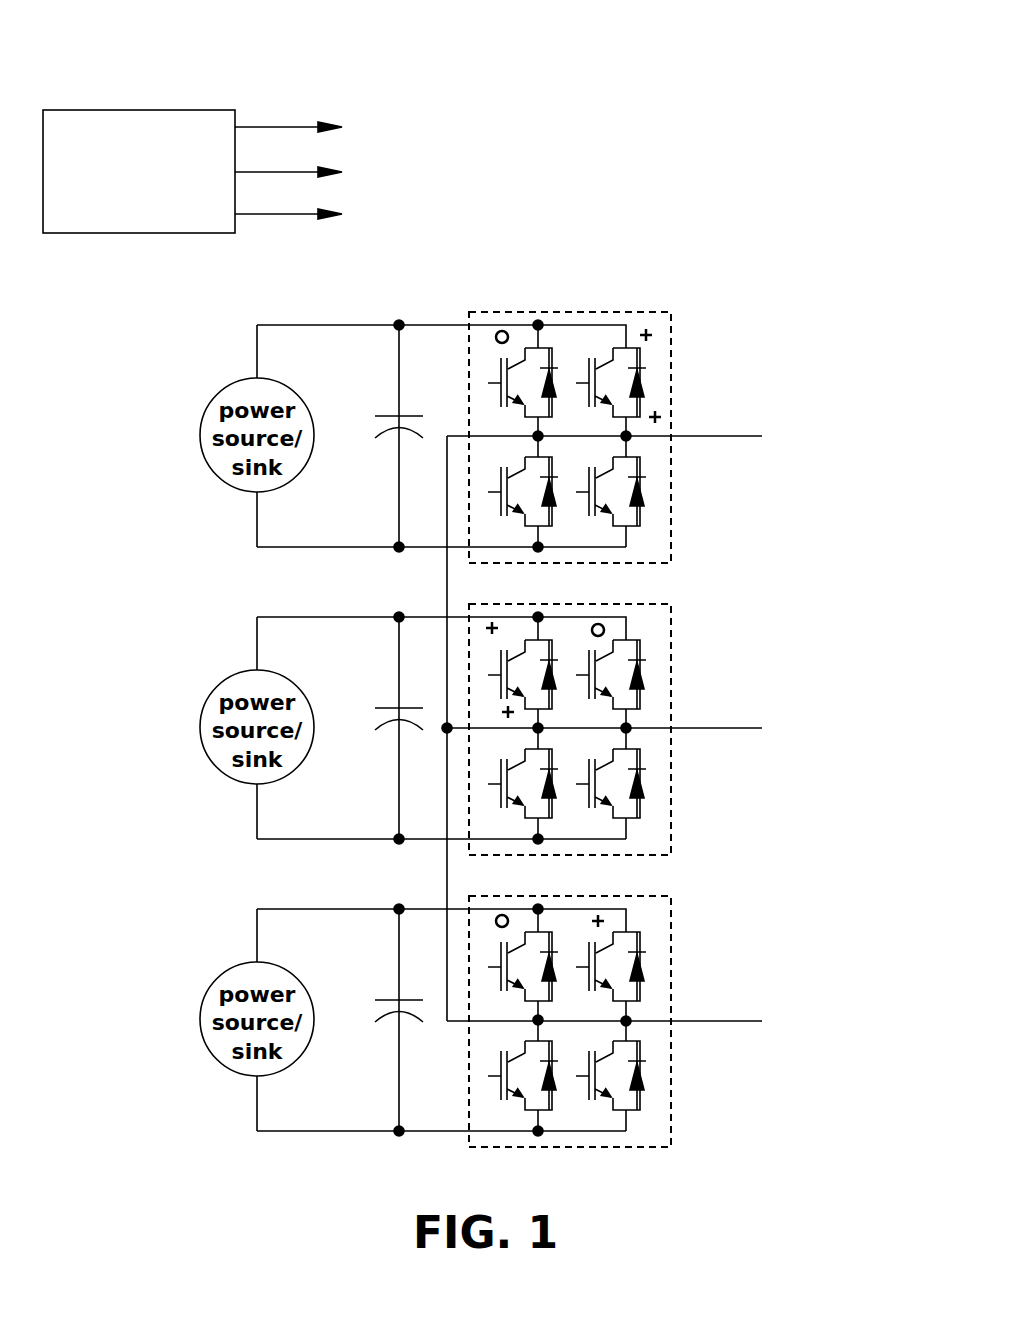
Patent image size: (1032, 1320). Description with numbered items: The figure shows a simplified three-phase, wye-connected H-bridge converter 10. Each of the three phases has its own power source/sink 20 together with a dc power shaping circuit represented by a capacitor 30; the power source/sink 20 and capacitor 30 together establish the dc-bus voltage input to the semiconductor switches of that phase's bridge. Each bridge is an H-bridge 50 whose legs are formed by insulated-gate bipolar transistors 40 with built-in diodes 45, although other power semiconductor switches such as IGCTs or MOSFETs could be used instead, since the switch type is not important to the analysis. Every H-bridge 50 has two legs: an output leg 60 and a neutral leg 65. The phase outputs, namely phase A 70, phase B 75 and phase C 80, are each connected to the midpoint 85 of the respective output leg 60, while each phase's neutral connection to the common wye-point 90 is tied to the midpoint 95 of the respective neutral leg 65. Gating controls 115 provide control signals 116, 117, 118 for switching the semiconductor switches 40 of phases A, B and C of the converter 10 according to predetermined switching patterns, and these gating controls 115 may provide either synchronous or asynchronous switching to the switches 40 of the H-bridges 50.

The H-bridge converter 10 is at (742, 243).
The power source/sink 20 is at (217, 397).
The capacitor 30 is at (383, 412).
The insulated-gate bipolar transistor 40 is at (500, 372).
The built-in diode 45 is at (557, 482).
The H-bridge 50 is at (720, 318).
The output leg 60 is at (662, 394).
The neutral leg 65 is at (478, 406).
The phase A 70 is at (710, 436).
The phase B 75 is at (708, 728).
The phase C 80 is at (708, 1021).
The midpoint of output bridge leg 85 is at (630, 438).
The wye-point 90 is at (443, 731).
The midpoint of neutral leg 95 is at (533, 439).
The gating controls 115 is at (140, 110).
The control signal 116 is at (267, 127).
The control signal 117 is at (288, 172).
The control signal 118 is at (283, 214).